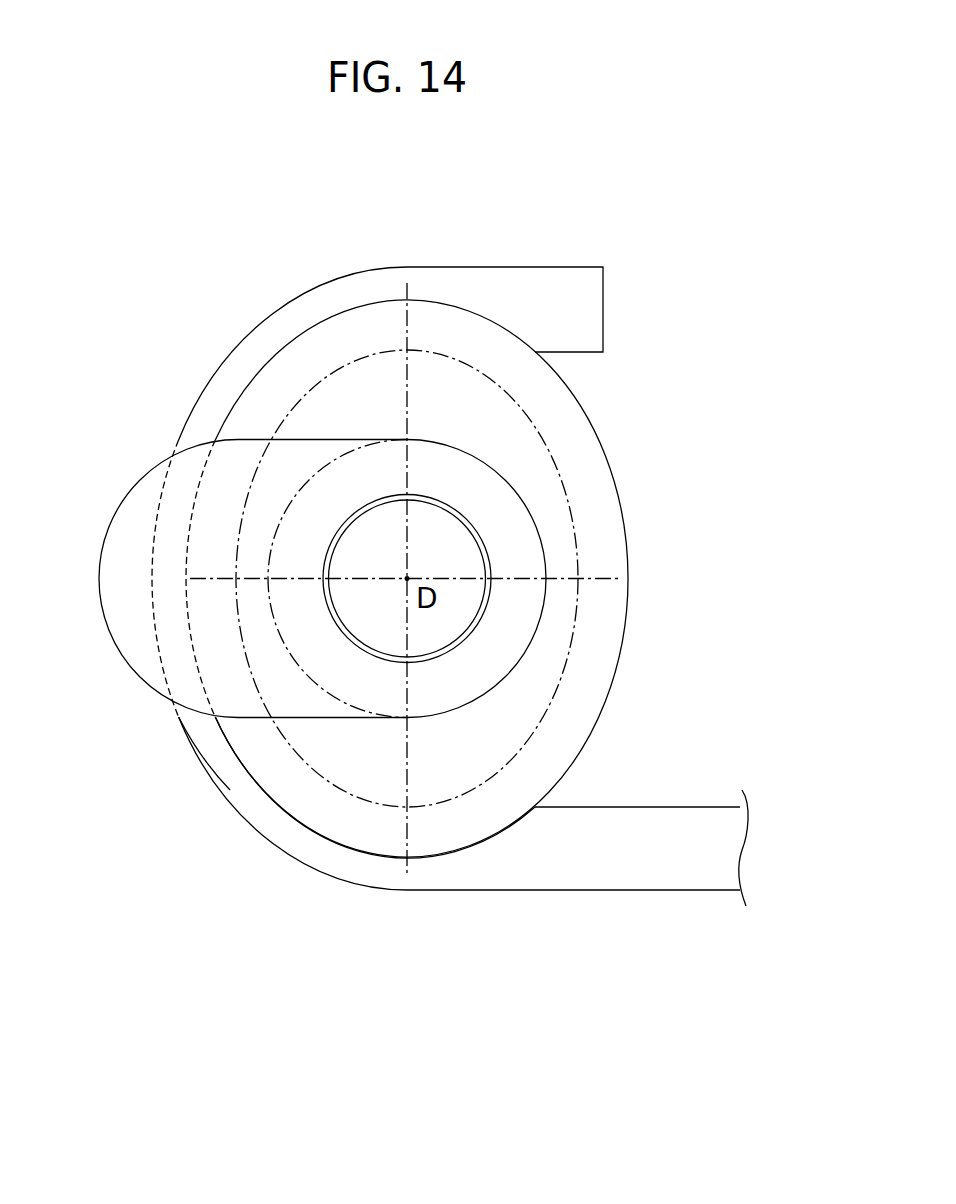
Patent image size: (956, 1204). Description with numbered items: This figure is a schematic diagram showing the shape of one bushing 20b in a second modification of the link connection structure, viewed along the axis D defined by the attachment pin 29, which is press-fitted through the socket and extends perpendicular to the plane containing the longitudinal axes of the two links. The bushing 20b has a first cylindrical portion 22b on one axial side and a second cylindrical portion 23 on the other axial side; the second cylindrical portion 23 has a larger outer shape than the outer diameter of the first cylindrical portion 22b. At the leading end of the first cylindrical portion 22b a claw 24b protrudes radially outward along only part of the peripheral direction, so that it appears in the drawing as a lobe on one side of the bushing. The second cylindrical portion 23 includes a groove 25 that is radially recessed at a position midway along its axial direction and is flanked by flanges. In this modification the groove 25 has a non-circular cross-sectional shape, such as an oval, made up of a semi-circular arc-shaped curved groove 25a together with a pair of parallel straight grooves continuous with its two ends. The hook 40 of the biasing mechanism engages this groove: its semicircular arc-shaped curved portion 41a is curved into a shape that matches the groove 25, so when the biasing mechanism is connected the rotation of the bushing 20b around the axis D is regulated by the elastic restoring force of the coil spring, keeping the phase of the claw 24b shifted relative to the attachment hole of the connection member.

The bushing 20b is at (673, 441).
The first cylindrical portion 22b is at (537, 525).
The second cylindrical portion 23 is at (617, 680).
The claw 24b is at (123, 505).
The groove 25 is at (323, 827).
The curved groove 25a is at (297, 755).
The attachment pin 29 is at (453, 510).
The hook 40 is at (608, 927).
The curved portion 41a is at (183, 732).